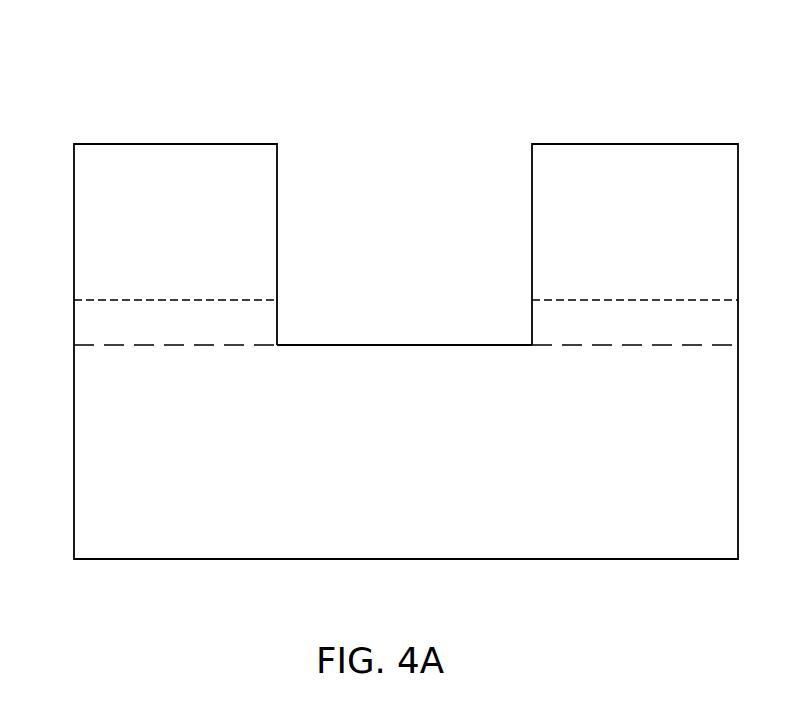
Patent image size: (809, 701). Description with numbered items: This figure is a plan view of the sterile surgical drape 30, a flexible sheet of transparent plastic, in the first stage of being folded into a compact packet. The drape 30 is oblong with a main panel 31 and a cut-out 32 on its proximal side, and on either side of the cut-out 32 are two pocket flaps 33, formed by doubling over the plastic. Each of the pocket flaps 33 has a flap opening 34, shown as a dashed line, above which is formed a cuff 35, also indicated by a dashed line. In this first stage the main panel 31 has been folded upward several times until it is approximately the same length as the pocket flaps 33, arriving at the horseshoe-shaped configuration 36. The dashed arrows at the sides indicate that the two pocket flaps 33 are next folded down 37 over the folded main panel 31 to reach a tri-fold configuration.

The sterile surgical drape 30 is at (712, 76).
The main panel 31 is at (392, 531).
The cut-out 32 is at (382, 186).
The pocket flaps 33 is at (176, 137).
The flap opening 34 is at (172, 353).
The cuff 35 is at (280, 302).
The horseshoe-shaped configuration 36 is at (635, 578).
The folded down 37 is at (53, 277).